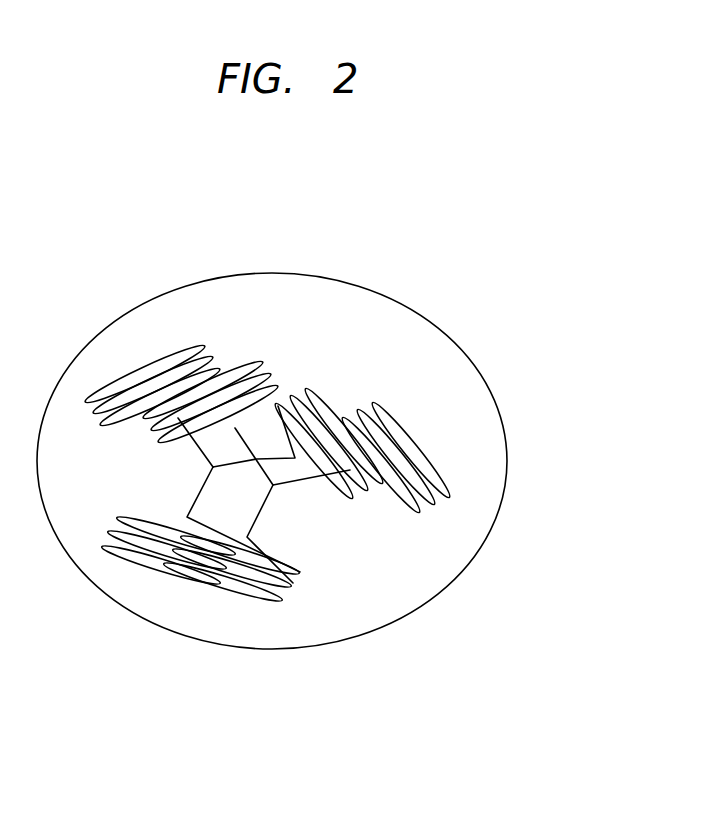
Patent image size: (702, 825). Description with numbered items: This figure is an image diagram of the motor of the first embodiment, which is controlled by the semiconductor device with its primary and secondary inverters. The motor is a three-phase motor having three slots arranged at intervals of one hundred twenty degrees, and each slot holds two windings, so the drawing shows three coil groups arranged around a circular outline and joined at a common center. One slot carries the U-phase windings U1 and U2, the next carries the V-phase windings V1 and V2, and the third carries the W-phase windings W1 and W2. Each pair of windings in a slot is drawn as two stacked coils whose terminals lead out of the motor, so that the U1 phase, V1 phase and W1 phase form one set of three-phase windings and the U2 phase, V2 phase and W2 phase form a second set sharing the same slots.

The U1 phase winding U1 is at (197, 383).
The U2 phase winding U2 is at (133, 363).
The V1 phase winding V1 is at (218, 593).
The V2 phase winding V2 is at (158, 575).
The W1 phase winding W1 is at (422, 458).
The W2 phase winding W2 is at (387, 430).